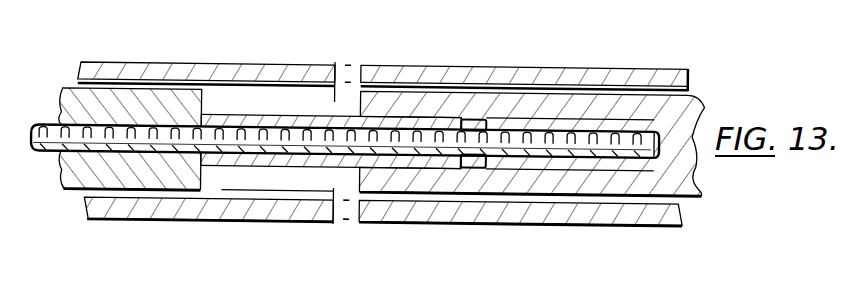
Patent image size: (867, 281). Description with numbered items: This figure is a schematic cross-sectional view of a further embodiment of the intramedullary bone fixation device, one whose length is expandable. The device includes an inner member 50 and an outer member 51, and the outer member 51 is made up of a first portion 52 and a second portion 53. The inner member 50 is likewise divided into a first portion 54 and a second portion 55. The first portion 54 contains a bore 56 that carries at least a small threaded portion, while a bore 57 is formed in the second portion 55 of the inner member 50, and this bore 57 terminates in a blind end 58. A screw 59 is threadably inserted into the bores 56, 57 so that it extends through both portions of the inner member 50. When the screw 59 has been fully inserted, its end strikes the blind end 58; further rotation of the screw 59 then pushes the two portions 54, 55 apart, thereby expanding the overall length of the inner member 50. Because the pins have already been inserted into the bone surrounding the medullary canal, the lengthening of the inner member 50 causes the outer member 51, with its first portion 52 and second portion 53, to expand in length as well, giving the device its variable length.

The inner member 50 is at (149, 193).
The outer member 51 is at (425, 60).
The first portion 52 is at (175, 73).
The second portion 53 is at (487, 77).
The first portion 54 is at (93, 172).
The second portion 55 is at (606, 107).
The bore 56 is at (228, 132).
The bore 57 is at (550, 133).
The blind end 58 is at (662, 133).
The screw 59 is at (115, 130).